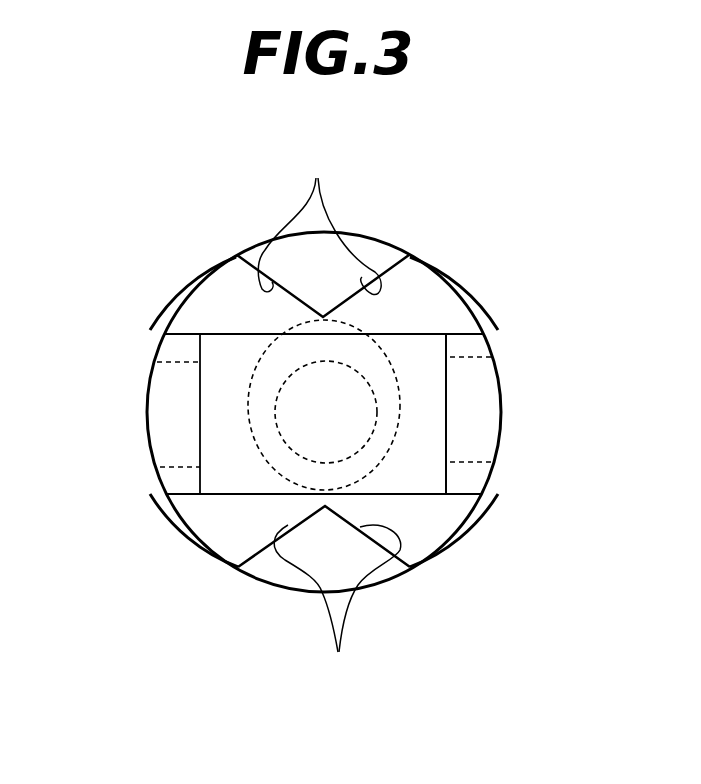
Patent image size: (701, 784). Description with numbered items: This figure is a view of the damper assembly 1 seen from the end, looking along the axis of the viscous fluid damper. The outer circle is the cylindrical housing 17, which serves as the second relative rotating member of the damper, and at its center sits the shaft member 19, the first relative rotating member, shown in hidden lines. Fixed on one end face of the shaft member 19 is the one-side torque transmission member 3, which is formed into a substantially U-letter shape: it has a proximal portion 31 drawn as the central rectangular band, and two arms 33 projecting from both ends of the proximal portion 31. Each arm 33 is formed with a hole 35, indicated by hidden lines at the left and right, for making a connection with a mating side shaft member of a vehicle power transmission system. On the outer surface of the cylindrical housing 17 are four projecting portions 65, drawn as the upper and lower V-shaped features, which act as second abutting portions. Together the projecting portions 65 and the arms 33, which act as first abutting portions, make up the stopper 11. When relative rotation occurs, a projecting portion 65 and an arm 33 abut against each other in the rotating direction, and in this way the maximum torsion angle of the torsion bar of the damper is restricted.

The rotary body 1 is at (490, 203).
The one-side torque transmission member 3 is at (510, 358).
The stopper 11 is at (178, 290).
The cylindrical housing 17 is at (244, 245).
The shaft member 19 is at (264, 447).
The proximal portion 31 is at (420, 348).
The arm 33 is at (188, 496).
The hole 35 is at (157, 362).
The projecting portion 65 is at (329, 417).